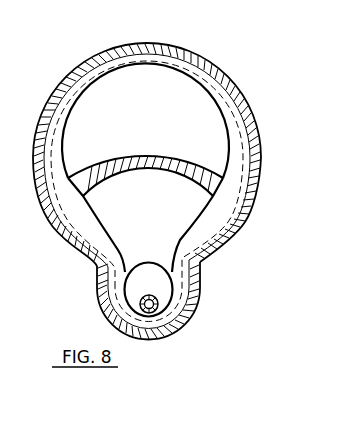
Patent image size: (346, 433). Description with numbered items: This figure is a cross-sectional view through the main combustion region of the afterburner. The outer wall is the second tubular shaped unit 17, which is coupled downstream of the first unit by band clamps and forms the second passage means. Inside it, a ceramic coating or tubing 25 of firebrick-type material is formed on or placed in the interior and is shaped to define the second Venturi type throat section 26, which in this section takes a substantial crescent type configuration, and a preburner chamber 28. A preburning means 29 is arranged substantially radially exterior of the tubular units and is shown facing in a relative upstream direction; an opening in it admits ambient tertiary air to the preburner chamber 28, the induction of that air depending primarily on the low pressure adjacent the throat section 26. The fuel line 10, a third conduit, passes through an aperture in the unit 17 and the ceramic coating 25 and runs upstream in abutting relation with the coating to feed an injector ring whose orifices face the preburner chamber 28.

The fuel line 10 is at (148, 295).
The second tubular shaped unit 17 is at (231, 82).
The ceramic coating or tubing 25 is at (258, 153).
The second Venturi type throat section 26 is at (165, 134).
The preburner chamber 28 is at (167, 223).
The preburning means 29 is at (90, 301).